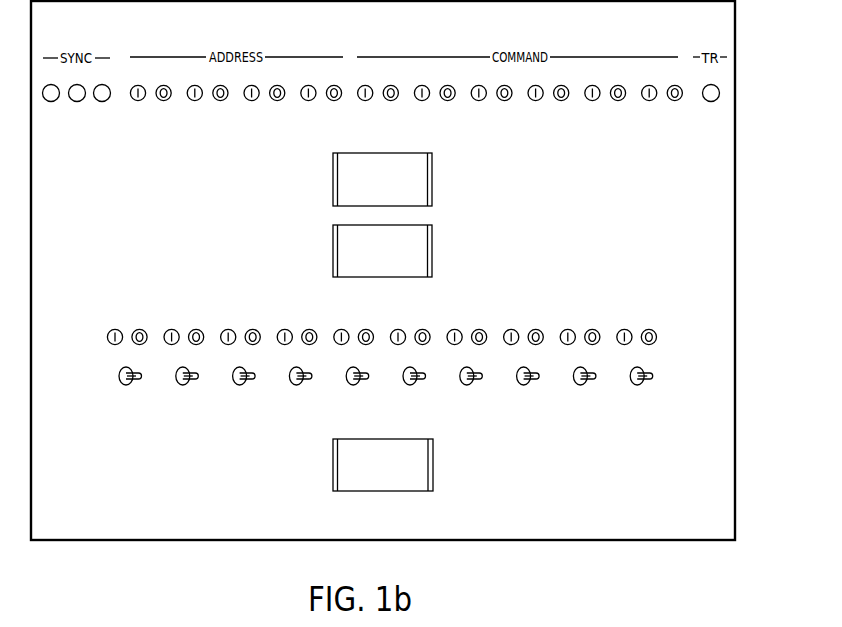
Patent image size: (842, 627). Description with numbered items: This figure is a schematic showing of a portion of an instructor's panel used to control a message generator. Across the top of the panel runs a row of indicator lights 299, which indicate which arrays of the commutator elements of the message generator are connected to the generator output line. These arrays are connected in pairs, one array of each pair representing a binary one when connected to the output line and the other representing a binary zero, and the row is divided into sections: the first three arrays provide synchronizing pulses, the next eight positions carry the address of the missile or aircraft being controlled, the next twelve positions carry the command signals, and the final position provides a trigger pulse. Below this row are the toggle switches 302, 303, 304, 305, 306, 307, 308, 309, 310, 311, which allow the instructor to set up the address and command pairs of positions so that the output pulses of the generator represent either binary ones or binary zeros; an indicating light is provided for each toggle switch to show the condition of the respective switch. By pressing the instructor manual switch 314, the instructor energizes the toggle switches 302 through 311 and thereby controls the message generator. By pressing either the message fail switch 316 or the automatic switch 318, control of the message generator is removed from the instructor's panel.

The indicator lights 299 is at (98, 101).
The message fail switch 316 is at (432, 171).
The instructor manual switch 314 is at (432, 265).
The automatic switch 318 is at (433, 463).
The toggle switch 302 is at (124, 385).
The toggle switch 303 is at (181, 385).
The toggle switch 304 is at (238, 385).
The toggle switch 305 is at (295, 385).
The toggle switch 306 is at (351, 385).
The toggle switch 307 is at (408, 385).
The toggle switch 308 is at (465, 385).
The toggle switch 309 is at (522, 385).
The toggle switch 310 is at (579, 385).
The toggle switch 311 is at (636, 385).